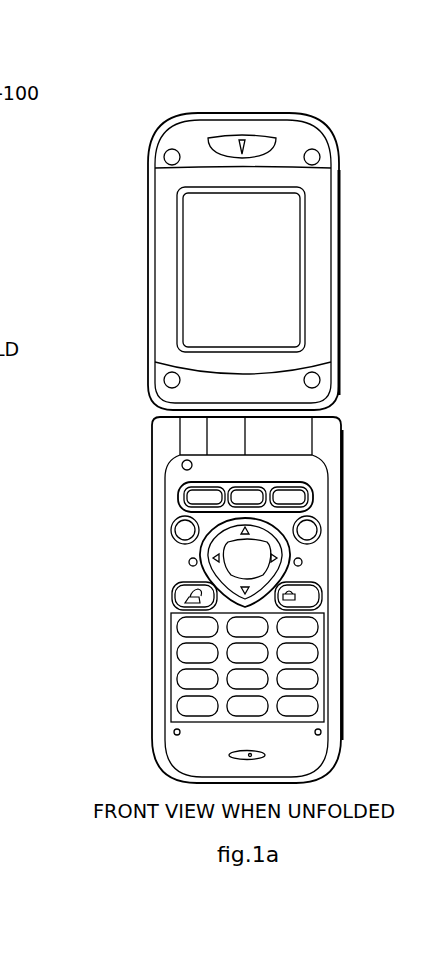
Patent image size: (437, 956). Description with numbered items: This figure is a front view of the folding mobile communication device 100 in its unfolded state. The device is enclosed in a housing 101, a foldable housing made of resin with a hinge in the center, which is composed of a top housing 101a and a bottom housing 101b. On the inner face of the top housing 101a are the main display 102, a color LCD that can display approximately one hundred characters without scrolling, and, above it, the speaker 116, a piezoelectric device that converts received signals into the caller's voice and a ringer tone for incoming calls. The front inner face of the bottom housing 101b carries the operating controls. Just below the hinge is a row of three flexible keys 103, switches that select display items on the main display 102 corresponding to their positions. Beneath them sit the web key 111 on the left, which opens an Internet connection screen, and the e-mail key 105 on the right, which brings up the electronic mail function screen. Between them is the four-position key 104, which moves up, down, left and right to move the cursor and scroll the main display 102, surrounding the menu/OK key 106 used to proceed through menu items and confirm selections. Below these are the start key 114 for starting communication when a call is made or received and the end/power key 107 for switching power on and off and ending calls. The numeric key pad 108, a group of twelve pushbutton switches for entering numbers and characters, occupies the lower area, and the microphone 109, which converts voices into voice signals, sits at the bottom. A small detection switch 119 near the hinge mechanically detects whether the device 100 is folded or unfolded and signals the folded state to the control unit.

The communication device 100 is at (204, 113).
The housing 101 is at (146, 426).
The top housing 101a is at (148, 332).
The bottom housing 101b is at (151, 447).
The main display 102 is at (255, 252).
The flexible keys 103 is at (222, 492).
The 4-position key 104 is at (268, 536).
The e-mail key 105 is at (322, 530).
The menu/OK key 106 is at (247, 557).
The end/power key 107 is at (318, 603).
The numeric key pad 108 is at (326, 673).
The microphone 109 is at (263, 752).
The web key 111 is at (171, 530).
The start key 114 is at (176, 600).
The speaker 116 is at (256, 132).
The detection switch 119 is at (181, 465).